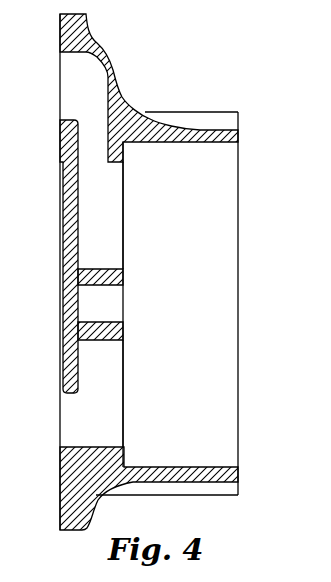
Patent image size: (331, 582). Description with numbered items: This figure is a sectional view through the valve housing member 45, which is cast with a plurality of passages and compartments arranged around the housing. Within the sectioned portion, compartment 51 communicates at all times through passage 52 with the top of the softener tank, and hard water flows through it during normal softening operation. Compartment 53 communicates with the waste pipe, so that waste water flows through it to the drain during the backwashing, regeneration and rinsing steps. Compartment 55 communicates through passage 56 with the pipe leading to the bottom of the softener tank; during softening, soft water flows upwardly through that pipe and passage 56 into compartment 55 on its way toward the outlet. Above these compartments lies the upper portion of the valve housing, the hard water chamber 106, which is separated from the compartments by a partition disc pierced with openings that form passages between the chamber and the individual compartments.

The member 45 is at (118, 61).
The passage 56 is at (66, 88).
The compartment 55 is at (114, 208).
The hard water chamber 106 is at (209, 245).
The compartment 53 is at (115, 297).
The compartment 51 is at (112, 385).
The passage 52 is at (72, 418).